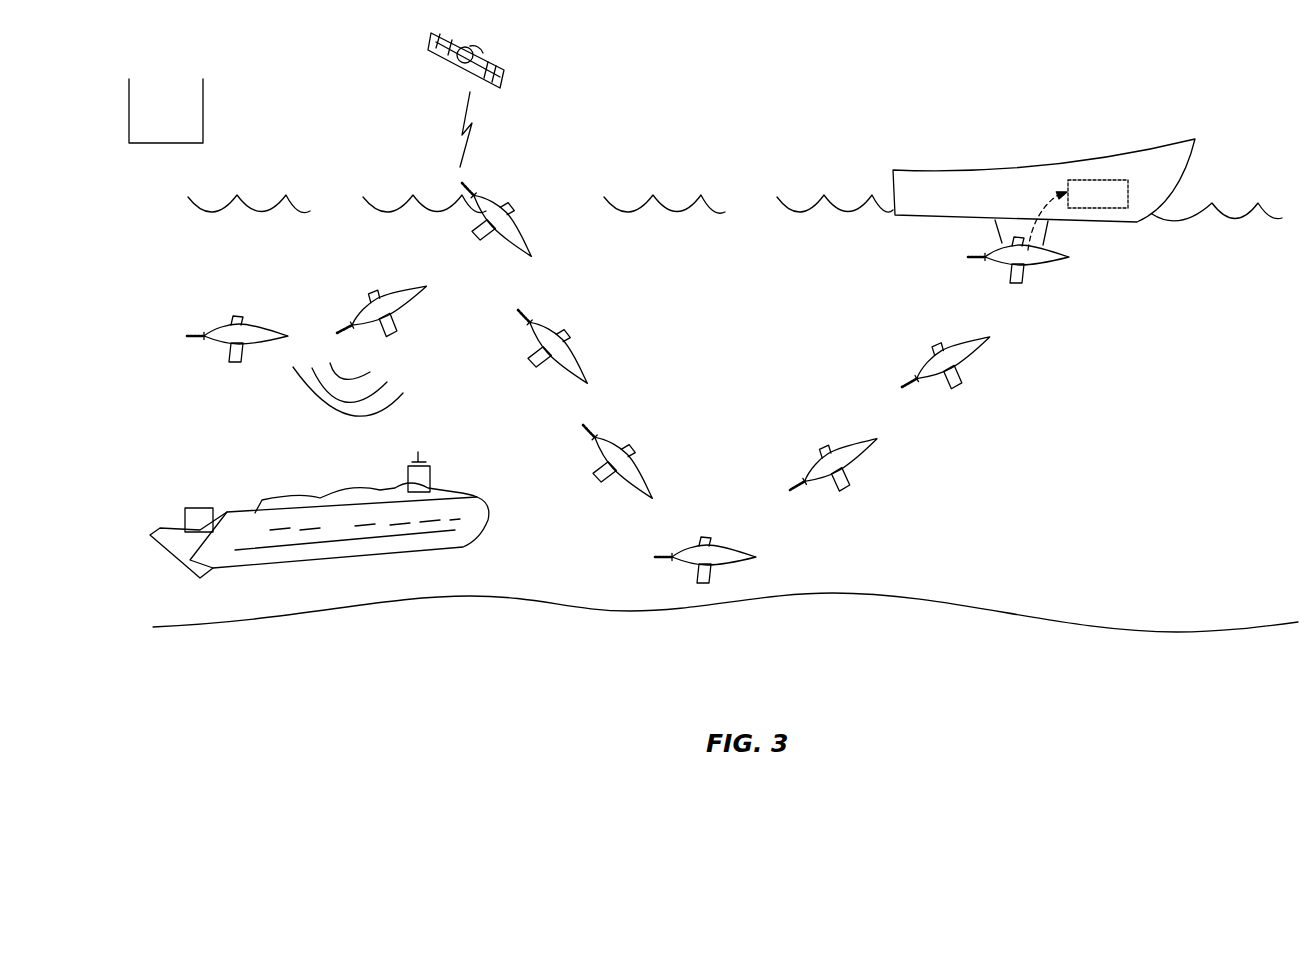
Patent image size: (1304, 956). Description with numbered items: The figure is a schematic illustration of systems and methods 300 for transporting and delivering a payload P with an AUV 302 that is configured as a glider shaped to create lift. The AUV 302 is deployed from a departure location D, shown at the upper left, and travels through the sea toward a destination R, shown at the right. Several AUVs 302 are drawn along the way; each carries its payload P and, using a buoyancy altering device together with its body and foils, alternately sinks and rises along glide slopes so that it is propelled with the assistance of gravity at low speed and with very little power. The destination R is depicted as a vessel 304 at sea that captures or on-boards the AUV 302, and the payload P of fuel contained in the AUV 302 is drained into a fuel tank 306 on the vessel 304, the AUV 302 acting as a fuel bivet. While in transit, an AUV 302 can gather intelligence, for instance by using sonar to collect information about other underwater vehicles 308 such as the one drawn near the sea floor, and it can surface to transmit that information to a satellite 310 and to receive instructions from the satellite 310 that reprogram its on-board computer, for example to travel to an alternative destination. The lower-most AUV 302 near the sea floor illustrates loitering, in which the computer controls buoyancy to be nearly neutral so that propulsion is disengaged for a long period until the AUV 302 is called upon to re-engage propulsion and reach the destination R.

The systems and methods for transporting a payload 300 is at (345, 88).
The AUV 302 is at (353, 302).
The vessel 304 is at (1170, 140).
The fuel tank 306 is at (1115, 193).
The other underwater vehicles 308 is at (473, 522).
The satellite 310 is at (533, 73).
The departure location D is at (190, 277).
The destination R is at (937, 130).
The payload P is at (228, 336).